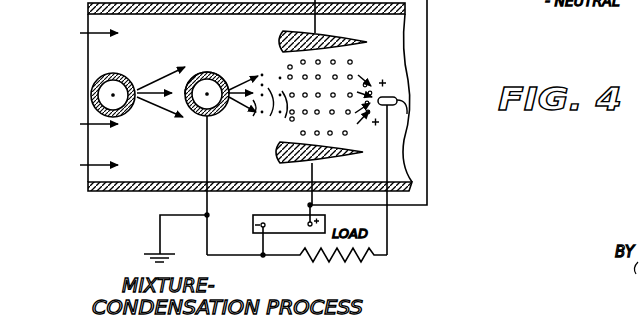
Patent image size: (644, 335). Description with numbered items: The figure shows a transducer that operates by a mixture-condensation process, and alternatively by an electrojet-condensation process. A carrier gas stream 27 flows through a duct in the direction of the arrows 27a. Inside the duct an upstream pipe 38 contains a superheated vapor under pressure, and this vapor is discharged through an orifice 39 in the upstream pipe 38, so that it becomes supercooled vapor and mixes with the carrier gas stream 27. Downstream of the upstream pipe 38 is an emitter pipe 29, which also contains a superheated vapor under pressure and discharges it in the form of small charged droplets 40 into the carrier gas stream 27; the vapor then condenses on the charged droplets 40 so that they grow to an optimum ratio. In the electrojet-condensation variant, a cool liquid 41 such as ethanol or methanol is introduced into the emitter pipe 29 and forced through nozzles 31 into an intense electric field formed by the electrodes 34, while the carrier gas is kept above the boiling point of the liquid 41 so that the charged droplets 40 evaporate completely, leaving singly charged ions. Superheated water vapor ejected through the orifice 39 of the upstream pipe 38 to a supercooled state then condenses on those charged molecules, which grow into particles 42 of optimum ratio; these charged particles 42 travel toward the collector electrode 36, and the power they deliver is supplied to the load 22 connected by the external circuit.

The carrier gas stream 27 is at (88, 25).
The flow direction arrows 27a is at (98, 160).
The upstream pipe 38 is at (90, 95).
The orifice 39 is at (139, 62).
The cool liquid 41 is at (200, 72).
The nozzles 31 is at (230, 87).
The emitter pipe 29 is at (200, 118).
The ionizing electrodes 34 is at (281, 40).
The particles 42 is at (333, 63).
The charged droplets 40 is at (268, 122).
The collector electrode 36 is at (407, 115).
The load 22 is at (357, 259).